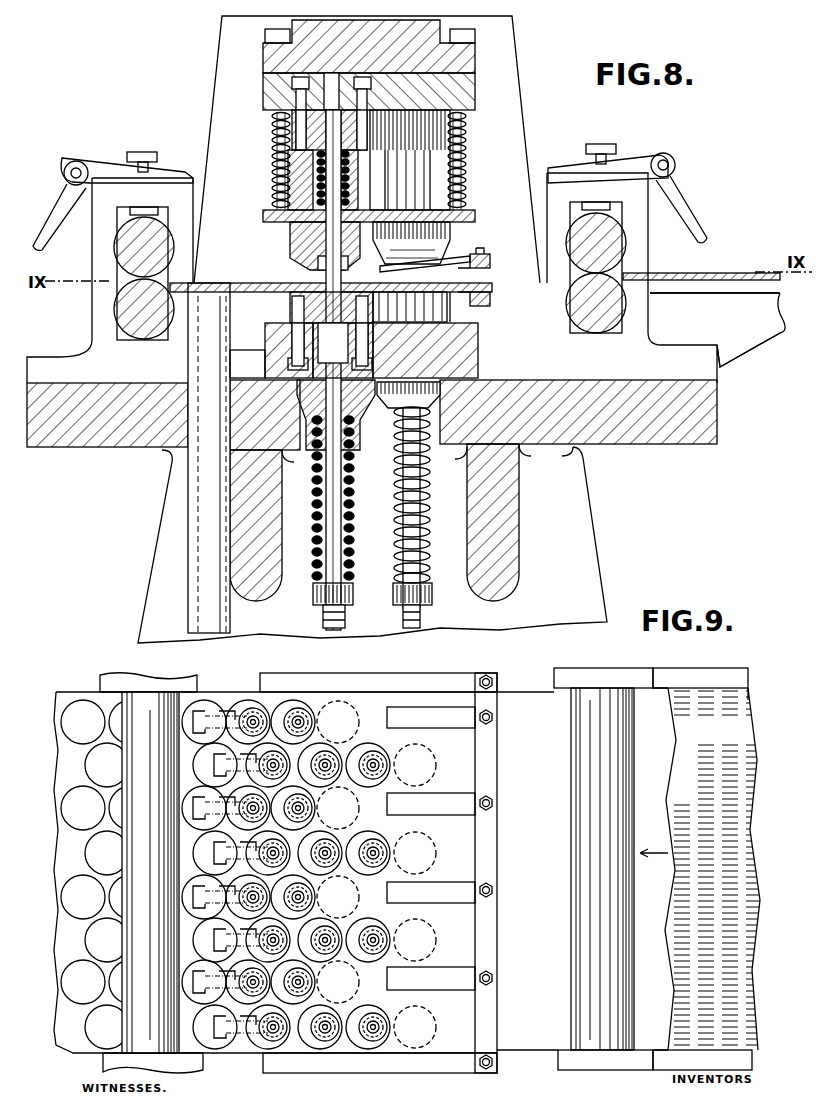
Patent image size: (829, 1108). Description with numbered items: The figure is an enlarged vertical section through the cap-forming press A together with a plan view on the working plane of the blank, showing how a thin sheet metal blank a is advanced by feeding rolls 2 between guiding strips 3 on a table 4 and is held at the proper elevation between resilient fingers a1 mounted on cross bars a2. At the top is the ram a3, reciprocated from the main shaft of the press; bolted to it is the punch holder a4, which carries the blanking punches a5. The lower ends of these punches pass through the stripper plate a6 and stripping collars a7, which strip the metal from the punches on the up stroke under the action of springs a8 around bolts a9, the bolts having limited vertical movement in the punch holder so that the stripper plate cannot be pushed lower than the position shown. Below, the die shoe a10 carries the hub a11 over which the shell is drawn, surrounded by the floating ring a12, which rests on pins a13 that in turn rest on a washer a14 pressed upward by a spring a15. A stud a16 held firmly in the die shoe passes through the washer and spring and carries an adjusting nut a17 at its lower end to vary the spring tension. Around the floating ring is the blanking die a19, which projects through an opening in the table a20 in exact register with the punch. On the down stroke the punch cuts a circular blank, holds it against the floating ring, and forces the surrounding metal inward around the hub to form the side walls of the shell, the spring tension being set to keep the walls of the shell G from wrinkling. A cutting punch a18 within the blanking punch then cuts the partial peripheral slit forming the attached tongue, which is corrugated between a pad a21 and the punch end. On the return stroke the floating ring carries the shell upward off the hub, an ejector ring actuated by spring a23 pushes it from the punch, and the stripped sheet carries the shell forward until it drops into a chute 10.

In FIG. 8, the cap-forming press A is at (522, 100).
In FIG. 8, the feeding rolls 2 is at (125, 247).
In FIG. 9, the feeding rolls 2 is at (150, 720).
In FIG. 8, the guiding strips 3 is at (728, 273).
In FIG. 9, the guiding strips 3 is at (690, 672).
In FIG. 8, the table 4 is at (742, 293).
In FIG. 9, the table 4 is at (712, 869).
In FIG. 8, the vertical chutes or guides 10 is at (207, 481).
In FIG. 9, the vertical chutes or guides 10 is at (202, 714).
In FIG. 9, the sheet metal blank a is at (440, 1088).
In FIG. 8, the resilient fingers a1 is at (458, 268).
In FIG. 9, the resilient fingers a1 is at (462, 800).
In FIG. 8, the cross bars a2 is at (490, 265).
In FIG. 9, the cross bars a2 is at (488, 852).
In FIG. 8, the ram a3 is at (292, 61).
In FIG. 8, the punch holder a4 is at (263, 93).
In FIG. 8, the blanking punch a5 is at (392, 172).
In FIG. 8, the stripper plate a6 is at (264, 217).
In FIG. 8, the stripping collars a7 is at (292, 239).
In FIG. 8, the springs a8 is at (276, 152).
In FIG. 8, the bolts a9 is at (272, 172).
In FIG. 8, the die shoe a10 is at (479, 332).
In FIG. 8, the hub a11 is at (266, 340).
In FIG. 8, the floating ring a12 is at (318, 290).
In FIG. 8, the pins a13 is at (266, 366).
In FIG. 8, the washer a14 is at (352, 432).
In FIG. 8, the spring a15 is at (395, 537).
In FIG. 8, the stud a16 is at (403, 621).
In FIG. 8, the adjusting nut a17 is at (393, 596).
In FIG. 8, the cutting punch a18 is at (434, 242).
In FIG. 8, the blanking die a19 is at (292, 306).
In FIG. 9, the blanking die a19 is at (212, 1040).
In FIG. 8, the table a20 is at (240, 283).
In FIG. 8, the pad a21 is at (380, 270).
In FIG. 8, the spring a23 is at (396, 194).
In FIG. 9, the cap or shell G is at (373, 1042).